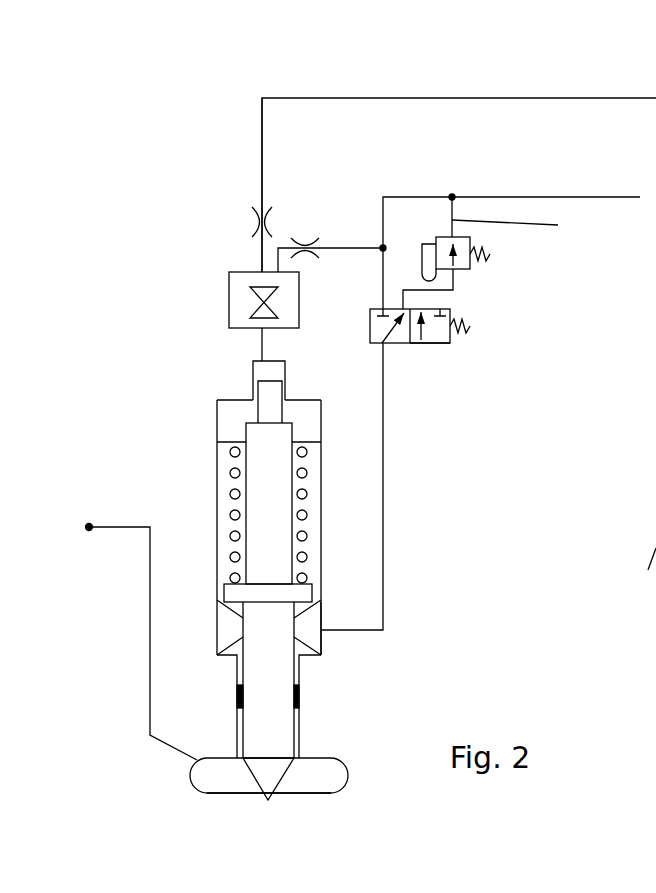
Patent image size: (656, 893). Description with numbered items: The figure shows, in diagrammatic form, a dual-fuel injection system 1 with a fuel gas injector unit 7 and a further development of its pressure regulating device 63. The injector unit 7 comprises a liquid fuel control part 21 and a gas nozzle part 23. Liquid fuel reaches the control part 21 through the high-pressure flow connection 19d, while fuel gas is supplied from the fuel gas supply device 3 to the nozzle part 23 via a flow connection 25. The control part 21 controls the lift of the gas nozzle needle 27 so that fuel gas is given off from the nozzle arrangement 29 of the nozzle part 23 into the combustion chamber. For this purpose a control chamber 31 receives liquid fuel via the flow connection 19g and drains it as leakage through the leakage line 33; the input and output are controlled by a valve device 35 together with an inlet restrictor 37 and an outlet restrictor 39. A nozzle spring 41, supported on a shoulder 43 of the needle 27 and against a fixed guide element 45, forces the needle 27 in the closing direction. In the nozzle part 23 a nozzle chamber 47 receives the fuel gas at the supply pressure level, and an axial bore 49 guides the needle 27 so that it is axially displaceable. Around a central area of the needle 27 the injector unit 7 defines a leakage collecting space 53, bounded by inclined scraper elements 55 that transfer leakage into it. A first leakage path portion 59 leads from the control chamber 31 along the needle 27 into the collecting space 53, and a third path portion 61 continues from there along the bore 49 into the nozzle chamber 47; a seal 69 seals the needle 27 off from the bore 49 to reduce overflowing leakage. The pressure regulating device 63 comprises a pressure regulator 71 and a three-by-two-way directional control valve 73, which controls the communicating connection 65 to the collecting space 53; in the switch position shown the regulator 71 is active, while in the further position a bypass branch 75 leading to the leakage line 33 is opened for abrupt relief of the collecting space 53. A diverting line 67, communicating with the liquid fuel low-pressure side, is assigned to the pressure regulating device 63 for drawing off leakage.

The dual-fuel injection system 1 is at (200, 220).
The fuel gas supply device 3 is at (88, 540).
The fuel gas injector unit 7 is at (197, 512).
The flow connection 19d is at (412, 97).
The flow connection of the control part 19g is at (261, 352).
The liquid fuel control part 21 is at (222, 375).
The gas nozzle part 23 is at (312, 770).
The flow connection 25 is at (150, 640).
The gas nozzle needle 27 is at (268, 680).
The nozzle arrangement 29 is at (279, 799).
The control chamber 31 is at (275, 373).
The leakage line 33 is at (333, 247).
The valve device 35 is at (285, 295).
The inlet restrictor 37 is at (250, 219).
The outlet restrictor 39 is at (298, 237).
The nozzle spring 41 is at (306, 494).
The shoulder 43 is at (300, 596).
The guide element 45 is at (232, 440).
The nozzle chamber 47 is at (213, 783).
The axial bore 49 is at (240, 722).
The leakage collecting space 53 is at (318, 621).
The scraper element 55 is at (228, 620).
The first portion of the leakage path 59 is at (282, 528).
The third path portion 61 is at (243, 748).
The pressure regulating device 63 is at (470, 295).
The communicating connection 65 is at (384, 547).
The diverting line 67 is at (522, 217).
The seal 69 is at (301, 703).
The pressure regulator 71 is at (498, 264).
The 3/2-way directional control valve 73 is at (438, 348).
The bypass branch 75 is at (381, 300).